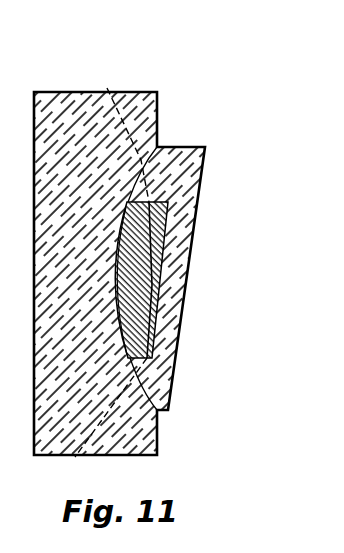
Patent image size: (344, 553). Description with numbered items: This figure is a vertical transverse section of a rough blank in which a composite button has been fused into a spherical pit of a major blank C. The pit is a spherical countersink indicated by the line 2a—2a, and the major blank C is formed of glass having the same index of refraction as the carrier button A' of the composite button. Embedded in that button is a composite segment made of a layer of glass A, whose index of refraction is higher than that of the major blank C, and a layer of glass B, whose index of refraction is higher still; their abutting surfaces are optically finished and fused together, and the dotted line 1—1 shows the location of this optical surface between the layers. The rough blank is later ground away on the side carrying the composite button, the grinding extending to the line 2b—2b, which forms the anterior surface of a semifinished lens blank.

The dotted line 1— 1 is at (128, 244).
The spherical countersink line 2a— 2a is at (104, 273).
The grinding line 2b— 2b is at (108, 90).
The layer of glass A is at (66, 224).
The carrier button A' is at (219, 152).
The layer of glass B is at (130, 231).
The major blank C is at (50, 126).